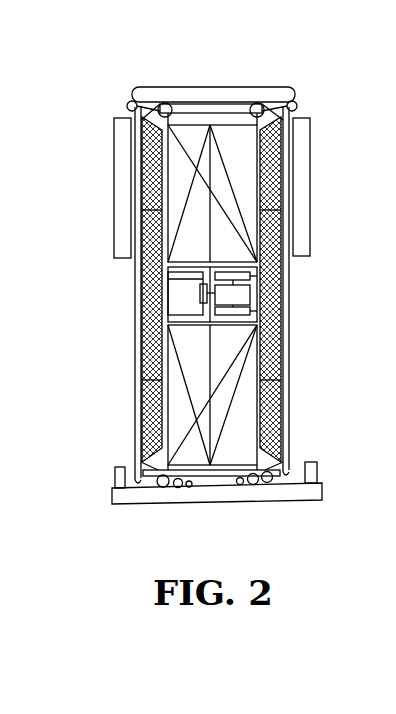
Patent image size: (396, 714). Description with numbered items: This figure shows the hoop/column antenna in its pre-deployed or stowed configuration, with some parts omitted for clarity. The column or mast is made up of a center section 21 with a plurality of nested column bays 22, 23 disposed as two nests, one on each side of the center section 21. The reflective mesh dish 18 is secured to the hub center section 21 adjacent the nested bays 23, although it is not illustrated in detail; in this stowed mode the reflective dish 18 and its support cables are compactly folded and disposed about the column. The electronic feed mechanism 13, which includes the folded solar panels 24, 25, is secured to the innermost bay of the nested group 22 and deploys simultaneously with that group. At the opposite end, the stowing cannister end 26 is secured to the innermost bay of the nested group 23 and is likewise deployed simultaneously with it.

The electronic feed mechanism 13 is at (203, 86).
The reflective mesh dish 18 is at (281, 316).
The center section 21 is at (175, 298).
The nested column bays 22 is at (248, 230).
The nested column bays 23 is at (258, 422).
The folded solar panel 24 is at (114, 184).
The folded solar panel 25 is at (310, 190).
The stowing cannister end 26 is at (220, 502).